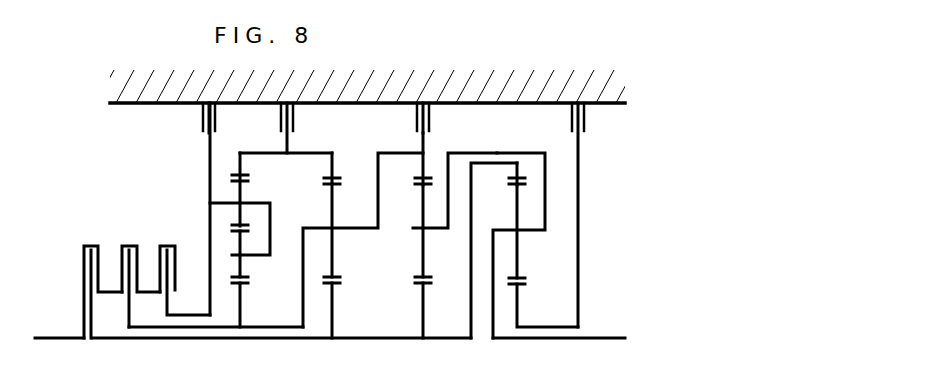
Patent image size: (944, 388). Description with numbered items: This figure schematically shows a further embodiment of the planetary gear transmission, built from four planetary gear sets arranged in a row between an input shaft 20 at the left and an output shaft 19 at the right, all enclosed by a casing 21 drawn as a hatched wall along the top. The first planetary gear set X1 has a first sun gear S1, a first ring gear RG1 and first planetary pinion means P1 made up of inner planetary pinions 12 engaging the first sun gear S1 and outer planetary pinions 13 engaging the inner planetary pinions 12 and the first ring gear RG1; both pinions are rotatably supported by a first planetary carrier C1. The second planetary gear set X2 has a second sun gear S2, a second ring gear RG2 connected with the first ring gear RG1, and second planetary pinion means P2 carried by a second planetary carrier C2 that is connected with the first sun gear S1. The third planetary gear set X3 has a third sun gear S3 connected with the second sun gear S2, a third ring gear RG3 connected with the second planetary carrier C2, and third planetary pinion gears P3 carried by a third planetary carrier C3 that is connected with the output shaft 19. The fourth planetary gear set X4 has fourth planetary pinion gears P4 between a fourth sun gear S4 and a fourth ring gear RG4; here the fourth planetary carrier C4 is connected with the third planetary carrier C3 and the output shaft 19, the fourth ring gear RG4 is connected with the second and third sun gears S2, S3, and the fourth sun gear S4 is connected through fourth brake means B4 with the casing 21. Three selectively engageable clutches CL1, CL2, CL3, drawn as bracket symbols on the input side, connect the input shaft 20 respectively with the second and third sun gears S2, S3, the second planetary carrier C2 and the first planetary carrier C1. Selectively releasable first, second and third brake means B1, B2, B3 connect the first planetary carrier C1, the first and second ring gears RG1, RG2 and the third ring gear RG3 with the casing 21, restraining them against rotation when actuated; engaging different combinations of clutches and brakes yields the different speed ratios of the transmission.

The casing 21 is at (120, 104).
The first brake means B1 is at (202, 125).
The second brake means B2 is at (280, 126).
The third brake means B3 is at (416, 126).
The fourth brake means B4 is at (585, 126).
The first ring gear RG1 is at (241, 178).
The second ring gear RG2 is at (333, 175).
The third ring gear RG3 is at (425, 175).
The fourth ring gear RG4 is at (518, 175).
The first clutch CL1 is at (91, 245).
The second clutch CL2 is at (130, 245).
The third clutch CL3 is at (166, 245).
The outer planetary pinions 13 is at (236, 213).
The inner planetary pinions 12 is at (236, 243).
The first planetary pinion means P1 is at (232, 265).
The first sun gear S1 is at (242, 318).
The first planetary carrier C1 is at (258, 250).
The first planetary gear set X1 is at (230, 298).
The second planetary carrier C2 is at (353, 228).
The second planetary pinion means P2 is at (333, 250).
The second sun gear S2 is at (334, 318).
The second planetary gear set X2 is at (323, 298).
The third planetary pinion gears P3 is at (422, 264).
The third planetary carrier C3 is at (440, 230).
The third sun gear S3 is at (425, 318).
The third planetary gear set X3 is at (418, 303).
The fourth planetary pinion gears P4 is at (516, 228).
The fourth planetary carrier C4 is at (530, 232).
The fourth sun gear S4 is at (519, 318).
The fourth planetary gear set X4 is at (510, 302).
The input shaft 20 is at (58, 339).
The output shaft 19 is at (578, 340).